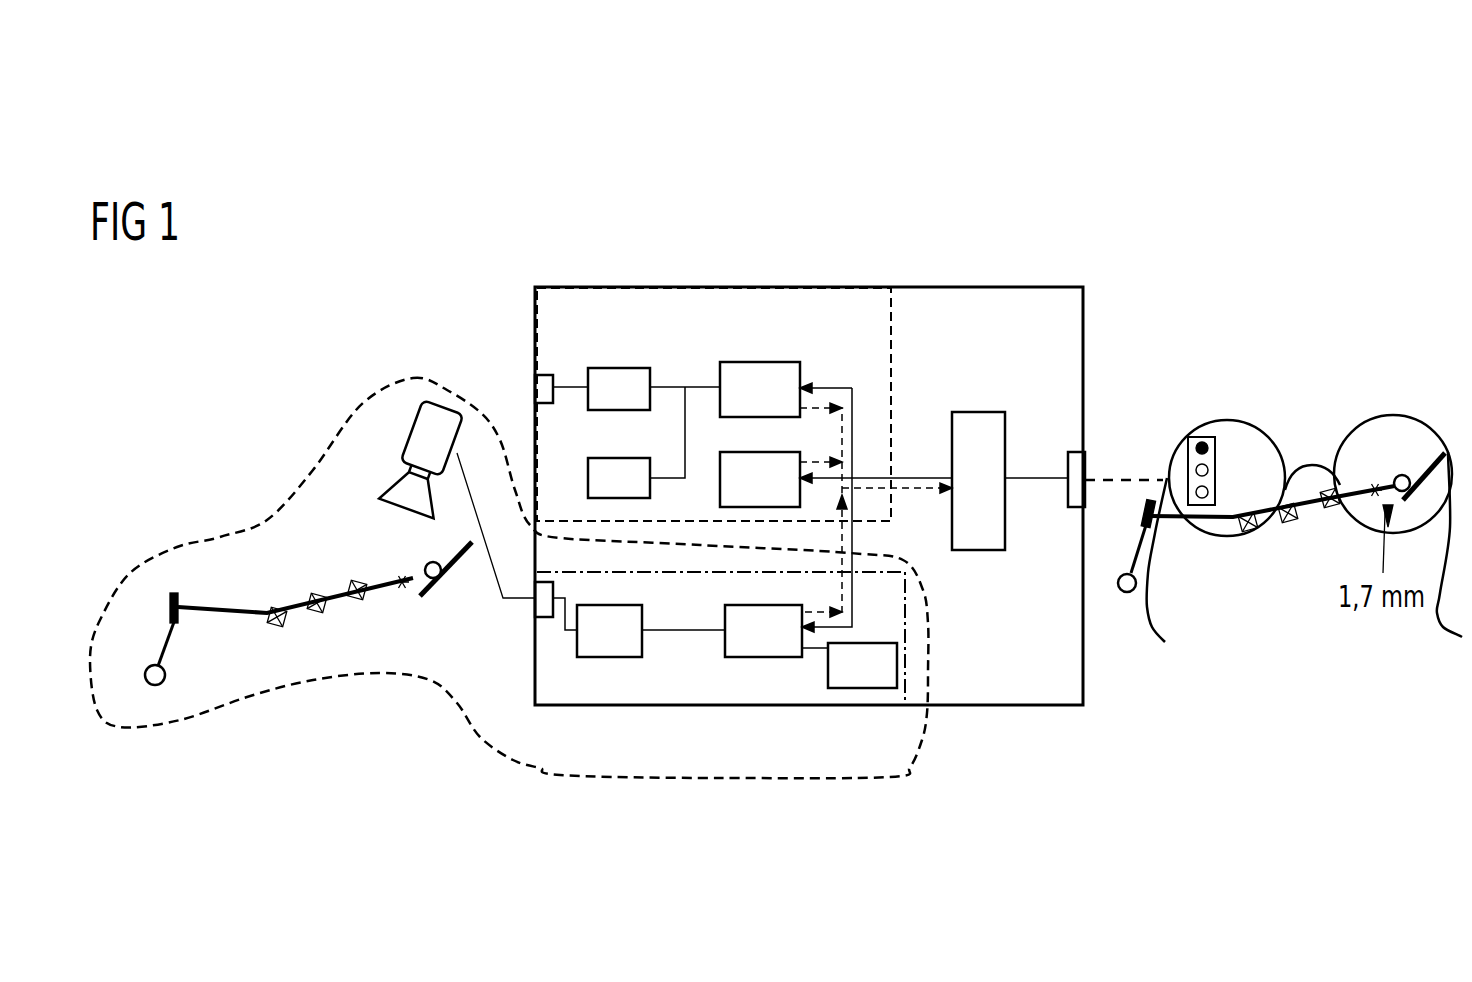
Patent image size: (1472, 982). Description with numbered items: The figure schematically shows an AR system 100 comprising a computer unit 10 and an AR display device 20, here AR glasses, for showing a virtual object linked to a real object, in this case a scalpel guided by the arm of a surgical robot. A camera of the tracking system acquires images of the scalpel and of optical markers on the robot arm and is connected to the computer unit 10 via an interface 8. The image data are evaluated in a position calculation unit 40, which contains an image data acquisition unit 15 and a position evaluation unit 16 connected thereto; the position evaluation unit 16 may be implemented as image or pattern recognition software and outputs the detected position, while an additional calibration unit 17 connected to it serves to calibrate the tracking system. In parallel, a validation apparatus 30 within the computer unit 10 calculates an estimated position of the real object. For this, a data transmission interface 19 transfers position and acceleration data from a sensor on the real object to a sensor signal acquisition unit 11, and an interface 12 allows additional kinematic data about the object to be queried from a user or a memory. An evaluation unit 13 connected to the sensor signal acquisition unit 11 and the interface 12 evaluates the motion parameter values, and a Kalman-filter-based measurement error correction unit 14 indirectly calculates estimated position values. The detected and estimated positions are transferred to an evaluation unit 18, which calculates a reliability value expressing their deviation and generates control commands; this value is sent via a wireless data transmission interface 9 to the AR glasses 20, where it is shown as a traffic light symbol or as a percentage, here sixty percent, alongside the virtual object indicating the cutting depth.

The AR system 100 is at (1122, 275).
The computer unit 10 is at (938, 298).
The validation apparatus 30 is at (823, 305).
The position calculation unit 40 is at (692, 685).
The data transmission interface 19 is at (546, 376).
The sensor signal acquisition unit 11 is at (620, 368).
The interface 12 is at (597, 458).
The evaluation unit 13 is at (760, 362).
The measurement error correction unit 14 is at (718, 490).
The evaluation unit 18 is at (975, 412).
The wireless data transmission interface 9 is at (1078, 508).
The interface 8 is at (545, 617).
The image data acquisition unit 15 is at (610, 658).
The position evaluation unit 16 is at (765, 658).
The calibration unit 17 is at (862, 643).
The AR display device 20 is at (1353, 441).